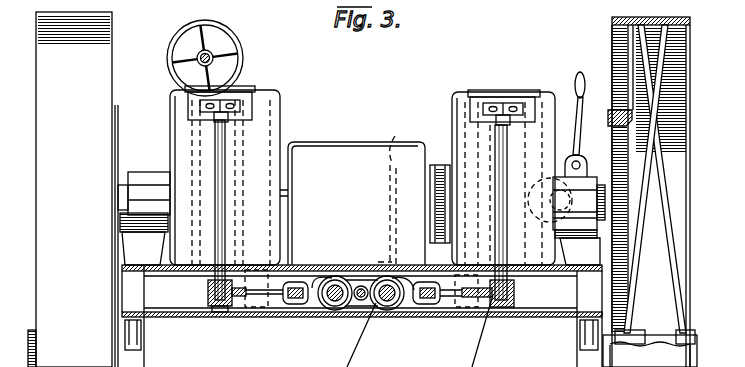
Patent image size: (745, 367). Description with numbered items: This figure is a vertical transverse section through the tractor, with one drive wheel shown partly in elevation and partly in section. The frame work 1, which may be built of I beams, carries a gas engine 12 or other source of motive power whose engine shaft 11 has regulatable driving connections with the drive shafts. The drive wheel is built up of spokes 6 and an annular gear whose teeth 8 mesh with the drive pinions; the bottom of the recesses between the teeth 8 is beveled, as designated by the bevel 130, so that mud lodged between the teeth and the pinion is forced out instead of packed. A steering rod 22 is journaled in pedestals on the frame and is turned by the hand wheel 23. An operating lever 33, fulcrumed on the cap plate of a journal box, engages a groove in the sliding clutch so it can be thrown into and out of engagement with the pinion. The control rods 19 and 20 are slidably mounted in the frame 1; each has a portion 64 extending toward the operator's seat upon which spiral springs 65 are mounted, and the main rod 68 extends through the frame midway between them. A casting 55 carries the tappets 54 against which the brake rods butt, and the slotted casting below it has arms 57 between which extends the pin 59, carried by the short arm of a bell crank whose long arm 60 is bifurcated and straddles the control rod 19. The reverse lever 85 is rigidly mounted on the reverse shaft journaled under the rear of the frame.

The frame work 1 is at (140, 295).
The spokes 6 is at (670, 236).
The teeth 8 is at (613, 287).
The engine shaft 11 is at (281, 196).
The gas engine 12 is at (356, 203).
The control rod 19 is at (404, 283).
The control rod 20 is at (312, 302).
The steering rod 22 is at (201, 52).
The hand wheel 23 is at (240, 40).
The operating lever 33 is at (572, 86).
The tappet 54 is at (228, 104).
The casting 55 is at (492, 110).
The arm 57 is at (512, 292).
The pin 59 is at (507, 268).
The long arm 60 is at (460, 296).
The portion 64 is at (337, 301).
The spiral springs 65 is at (318, 270).
The main rod 68 is at (334, 271).
The reverse lever 85 is at (390, 191).
The bevel 130 is at (607, 124).